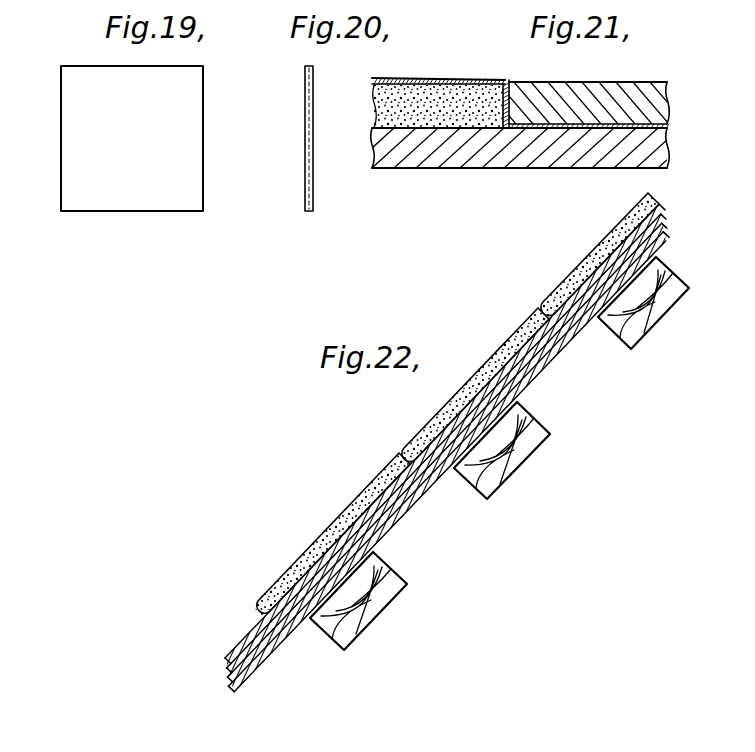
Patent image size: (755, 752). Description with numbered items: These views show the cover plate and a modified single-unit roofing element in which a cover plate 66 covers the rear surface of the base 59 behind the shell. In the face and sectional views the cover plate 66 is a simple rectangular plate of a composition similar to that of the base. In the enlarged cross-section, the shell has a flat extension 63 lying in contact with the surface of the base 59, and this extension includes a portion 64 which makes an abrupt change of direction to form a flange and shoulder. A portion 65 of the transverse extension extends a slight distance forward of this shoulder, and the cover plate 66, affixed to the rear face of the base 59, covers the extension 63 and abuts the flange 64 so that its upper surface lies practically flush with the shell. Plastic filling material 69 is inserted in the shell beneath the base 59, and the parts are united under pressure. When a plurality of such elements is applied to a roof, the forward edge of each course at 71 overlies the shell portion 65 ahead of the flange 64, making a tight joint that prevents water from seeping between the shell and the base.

In FIG. 21, the base 59 is at (649, 169).
In FIG. 21, the flat extension 63 is at (539, 118).
In FIG. 21, the flange 64 is at (507, 100).
In FIG. 22, the flange 64 is at (452, 470).
In FIG. 21, the shell portion 65 is at (472, 80).
In FIG. 22, the shell portion 65 is at (418, 472).
In FIG. 19, the cover plate 66 is at (80, 125).
In FIG. 20, the cover plate 66 is at (305, 135).
In FIG. 21, the cover plate 66 is at (606, 97).
In FIG. 21, the plastic filling material 69 is at (407, 100).
In FIG. 22, the forward edge of course 71 is at (397, 477).